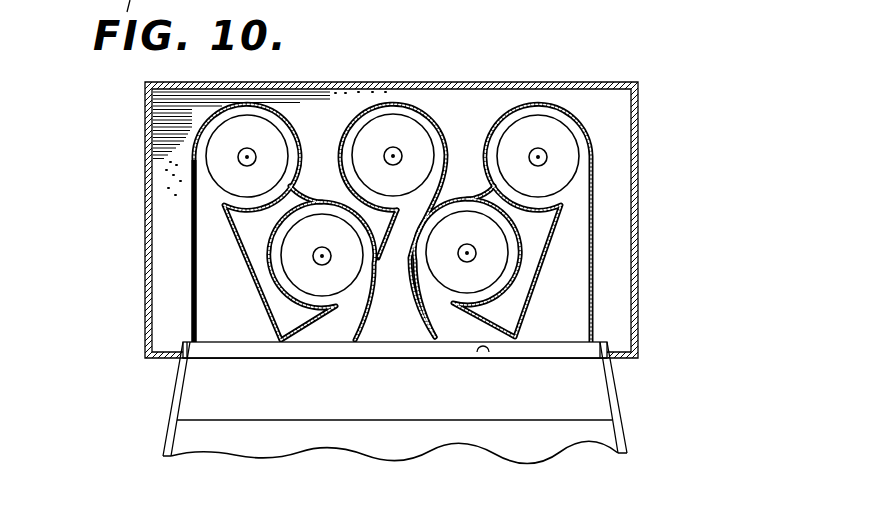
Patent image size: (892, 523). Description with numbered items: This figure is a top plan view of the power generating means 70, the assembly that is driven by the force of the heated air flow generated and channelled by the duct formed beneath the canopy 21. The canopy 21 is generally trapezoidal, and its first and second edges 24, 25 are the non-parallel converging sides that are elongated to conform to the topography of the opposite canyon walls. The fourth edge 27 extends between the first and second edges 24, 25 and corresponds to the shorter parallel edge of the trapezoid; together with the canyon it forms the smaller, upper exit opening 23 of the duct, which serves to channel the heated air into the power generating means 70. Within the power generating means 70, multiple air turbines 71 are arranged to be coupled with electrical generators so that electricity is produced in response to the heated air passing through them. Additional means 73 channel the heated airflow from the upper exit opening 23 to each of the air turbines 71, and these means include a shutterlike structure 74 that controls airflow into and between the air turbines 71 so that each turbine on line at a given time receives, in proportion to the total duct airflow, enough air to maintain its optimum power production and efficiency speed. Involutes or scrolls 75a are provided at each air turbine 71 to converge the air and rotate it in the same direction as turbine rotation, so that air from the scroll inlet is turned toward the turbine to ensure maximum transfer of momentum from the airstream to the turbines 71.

The power generating means 70 is at (582, 78).
The air turbines 71 is at (392, 205).
The additional means to channel the heated airflow 73 is at (598, 245).
The shutterlike structure 74 is at (243, 352).
The involutes or scrolls 75a is at (192, 266).
The fourth edge 27 is at (491, 349).
The exit opening 23 is at (557, 360).
The first edge 24 is at (630, 446).
The second edge 25 is at (165, 447).
The canopy 21 is at (485, 461).